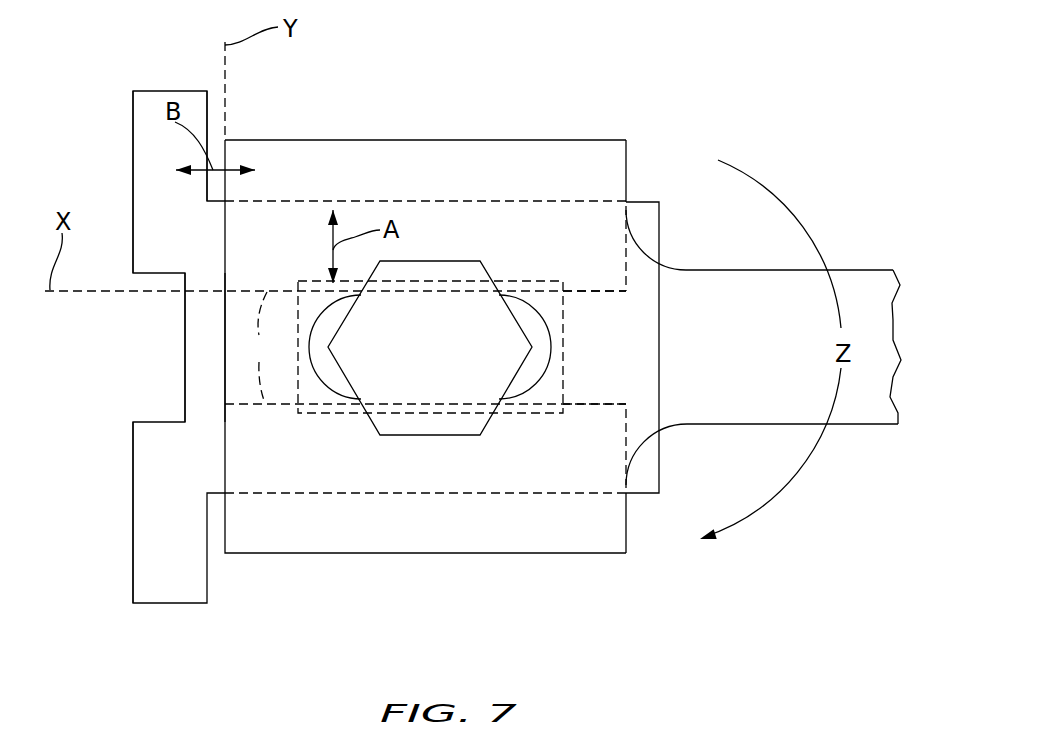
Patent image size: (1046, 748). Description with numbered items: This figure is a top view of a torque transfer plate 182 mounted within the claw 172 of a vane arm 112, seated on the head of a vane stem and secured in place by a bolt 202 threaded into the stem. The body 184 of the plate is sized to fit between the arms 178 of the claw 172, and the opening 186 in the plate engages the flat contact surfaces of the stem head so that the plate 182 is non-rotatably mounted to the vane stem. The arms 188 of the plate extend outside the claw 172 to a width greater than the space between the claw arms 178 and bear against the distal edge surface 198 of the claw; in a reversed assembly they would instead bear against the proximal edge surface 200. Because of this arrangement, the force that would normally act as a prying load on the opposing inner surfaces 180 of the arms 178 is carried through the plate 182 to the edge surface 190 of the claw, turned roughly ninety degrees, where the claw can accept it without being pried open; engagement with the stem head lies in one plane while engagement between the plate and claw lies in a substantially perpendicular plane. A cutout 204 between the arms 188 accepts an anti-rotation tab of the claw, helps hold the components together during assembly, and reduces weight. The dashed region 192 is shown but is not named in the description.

The vane arm 112 is at (862, 405).
The claw 172 is at (340, 115).
The arms 178 is at (613, 148).
The inner surfaces 180 is at (261, 347).
The torque transfer plate 182 is at (90, 485).
The body 184 is at (600, 330).
The opening 186 is at (547, 390).
The arms 188 is at (132, 215).
The edge surface 190 is at (222, 223).
The slots 192 is at (537, 278).
The distal edge surface 198 is at (224, 315).
The proximal edge surface 200 is at (627, 178).
The bolt 202 is at (452, 363).
The cutout 204 is at (150, 363).